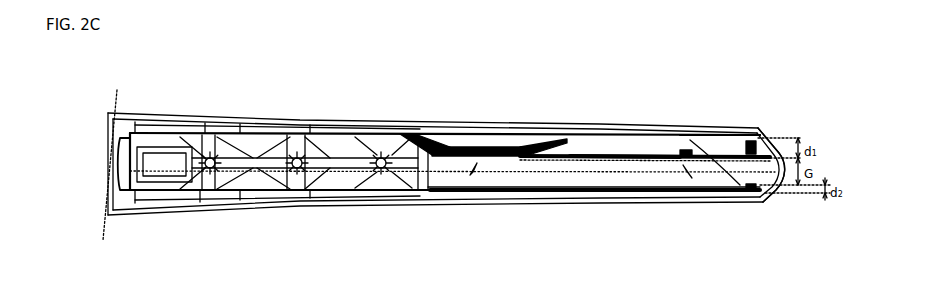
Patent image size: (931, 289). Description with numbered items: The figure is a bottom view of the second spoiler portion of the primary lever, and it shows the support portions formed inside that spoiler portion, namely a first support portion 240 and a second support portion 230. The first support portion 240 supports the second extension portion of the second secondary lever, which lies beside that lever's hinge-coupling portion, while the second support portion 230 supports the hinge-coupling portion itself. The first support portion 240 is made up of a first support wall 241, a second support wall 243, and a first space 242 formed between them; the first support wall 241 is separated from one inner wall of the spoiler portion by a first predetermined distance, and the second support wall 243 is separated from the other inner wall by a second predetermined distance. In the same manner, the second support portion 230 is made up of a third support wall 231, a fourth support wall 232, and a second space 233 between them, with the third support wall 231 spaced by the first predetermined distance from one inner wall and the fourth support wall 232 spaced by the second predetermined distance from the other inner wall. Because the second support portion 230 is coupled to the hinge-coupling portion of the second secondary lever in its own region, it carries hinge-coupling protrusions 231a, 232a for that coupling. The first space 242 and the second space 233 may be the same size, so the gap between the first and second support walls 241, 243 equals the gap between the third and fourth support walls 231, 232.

The second support portion 230 is at (628, 77).
The third support wall 231 is at (690, 145).
The hinge-coupling protrusion 231a is at (722, 162).
The fourth support wall 232 is at (760, 128).
The hinge-coupling protrusion 232a is at (748, 142).
The second space 233 is at (673, 155).
The first support portion 240 is at (497, 77).
The first support wall 241 is at (434, 124).
The first space 242 is at (472, 142).
The second support wall 243 is at (496, 190).